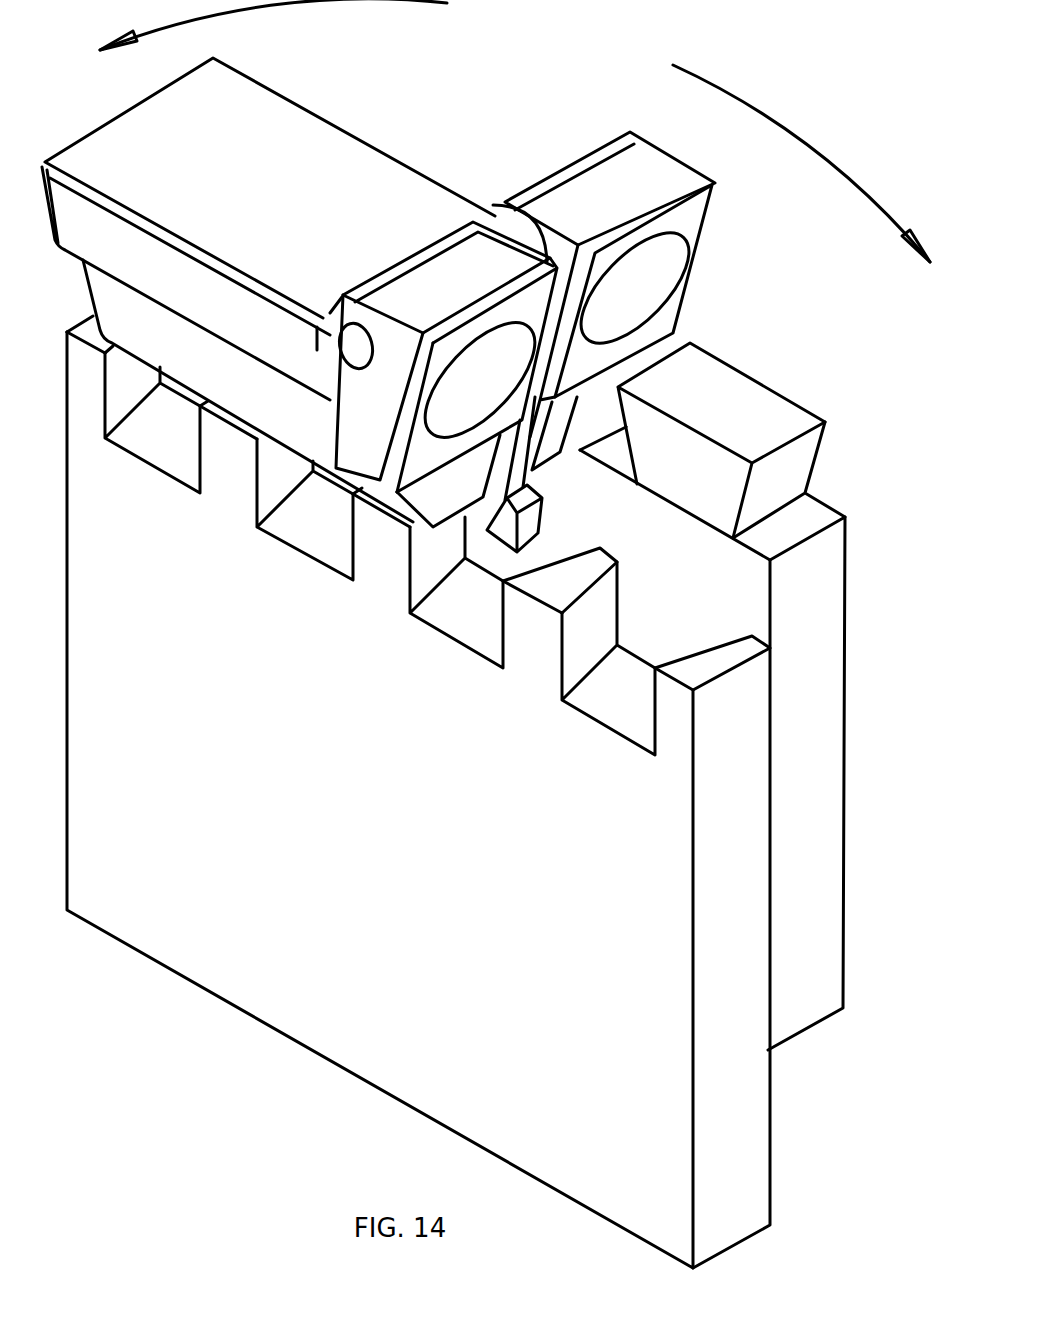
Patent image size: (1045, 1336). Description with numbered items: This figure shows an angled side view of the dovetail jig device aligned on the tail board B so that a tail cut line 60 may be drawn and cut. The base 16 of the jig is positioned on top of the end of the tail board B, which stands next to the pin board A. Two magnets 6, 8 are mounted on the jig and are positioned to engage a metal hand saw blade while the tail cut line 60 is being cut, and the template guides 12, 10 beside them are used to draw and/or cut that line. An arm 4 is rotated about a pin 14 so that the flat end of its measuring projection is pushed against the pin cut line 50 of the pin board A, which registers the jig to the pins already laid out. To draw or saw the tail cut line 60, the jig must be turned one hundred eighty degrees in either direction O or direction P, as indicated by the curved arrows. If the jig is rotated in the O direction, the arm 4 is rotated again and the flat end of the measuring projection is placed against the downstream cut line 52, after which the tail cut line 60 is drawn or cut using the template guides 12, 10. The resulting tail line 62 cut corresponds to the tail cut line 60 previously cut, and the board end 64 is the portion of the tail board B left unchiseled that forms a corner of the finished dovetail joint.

The arm 4 is at (514, 474).
The magnet 6 is at (450, 357).
The magnet 8 is at (610, 264).
The template guide 10 is at (562, 357).
The template guide 12 is at (418, 411).
The pin 14 is at (432, 288).
The base 16 is at (268, 290).
The pin cut line 50 is at (650, 698).
The cut line 52 is at (600, 583).
The tail cut line 60 is at (733, 520).
The tail line cut 62 is at (627, 437).
The board end 64 is at (721, 440).
The pin board A is at (418, 792).
The tail board B is at (712, 750).
The direction O is at (251, 40).
The direction P is at (803, 180).